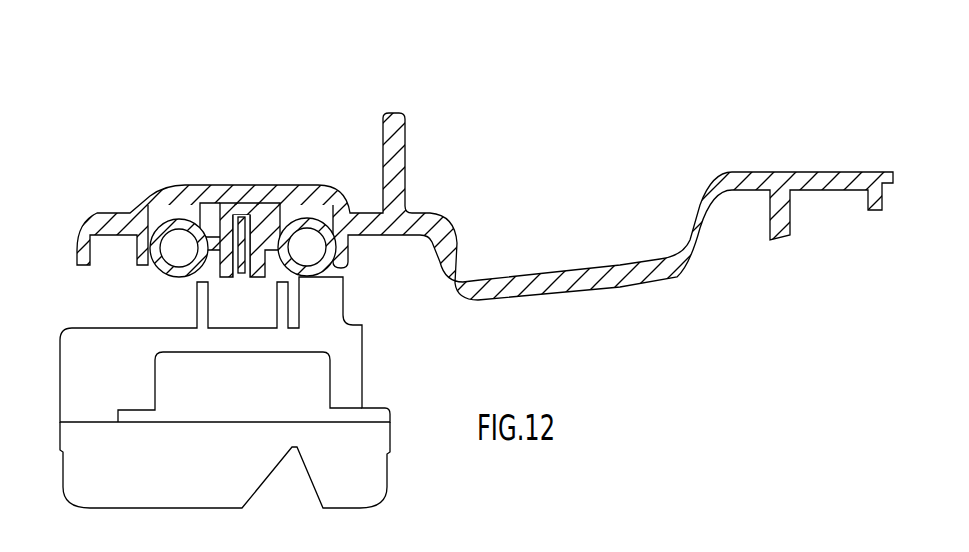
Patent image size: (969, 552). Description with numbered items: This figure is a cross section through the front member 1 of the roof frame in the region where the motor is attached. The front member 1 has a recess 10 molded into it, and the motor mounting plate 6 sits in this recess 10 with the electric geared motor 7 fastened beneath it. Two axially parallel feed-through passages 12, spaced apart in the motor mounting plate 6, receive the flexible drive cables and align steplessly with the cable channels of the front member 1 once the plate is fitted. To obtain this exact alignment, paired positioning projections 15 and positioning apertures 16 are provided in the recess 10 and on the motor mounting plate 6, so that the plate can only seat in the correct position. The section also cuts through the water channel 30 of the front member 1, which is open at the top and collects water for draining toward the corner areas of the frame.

The front member 1 is at (453, 217).
The water channel 30 is at (547, 267).
The motor mounting plate 6 is at (152, 270).
The recess 10 is at (268, 214).
The feed-through passages 12 is at (307, 240).
The positioning projections 15 is at (242, 216).
The positioning apertures 16 is at (241, 270).
The electric geared motor 7 is at (366, 358).